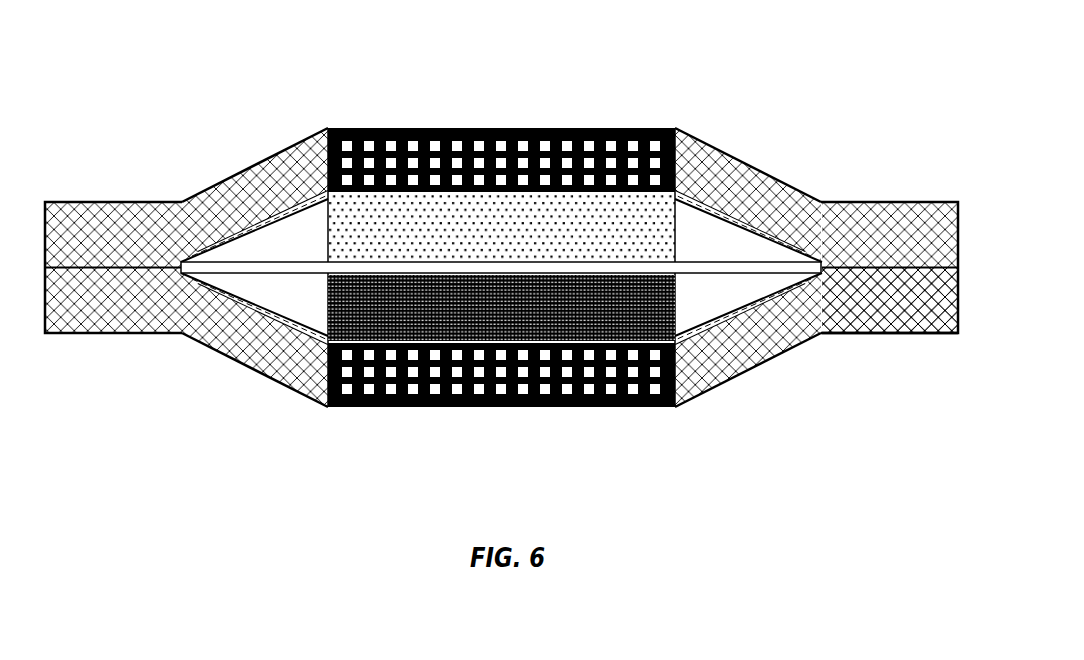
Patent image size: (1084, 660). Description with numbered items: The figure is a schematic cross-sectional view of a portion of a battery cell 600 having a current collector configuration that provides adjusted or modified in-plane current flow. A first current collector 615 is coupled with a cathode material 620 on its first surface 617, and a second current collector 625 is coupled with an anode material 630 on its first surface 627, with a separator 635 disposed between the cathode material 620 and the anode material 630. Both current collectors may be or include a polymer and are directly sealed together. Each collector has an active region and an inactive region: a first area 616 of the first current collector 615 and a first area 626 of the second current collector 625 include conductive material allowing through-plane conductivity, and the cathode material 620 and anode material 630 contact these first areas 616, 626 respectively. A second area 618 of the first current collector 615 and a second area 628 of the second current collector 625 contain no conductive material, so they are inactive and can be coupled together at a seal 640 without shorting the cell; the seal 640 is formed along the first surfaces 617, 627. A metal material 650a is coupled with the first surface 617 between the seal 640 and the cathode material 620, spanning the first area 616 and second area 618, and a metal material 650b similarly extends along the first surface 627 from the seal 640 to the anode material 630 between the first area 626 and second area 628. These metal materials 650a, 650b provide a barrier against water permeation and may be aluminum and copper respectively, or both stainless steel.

The battery cell 600 is at (157, 80).
The seal 640 is at (86, 265).
The first surface of first current collector 617 is at (268, 221).
The first surface of second current collector 627 is at (255, 325).
The metal material 650a is at (303, 192).
The metal material 650b is at (300, 340).
The cathode material 620 is at (523, 190).
The first area of first current collector 616 is at (618, 128).
The first area of second current collector 626 is at (578, 407).
The anode material 630 is at (518, 368).
The first current collector 615 is at (896, 202).
The second area of first current collector 618 is at (830, 202).
The second area of second current collector 628 is at (840, 333).
The second current collector 625 is at (725, 381).
The separator 635 is at (752, 280).